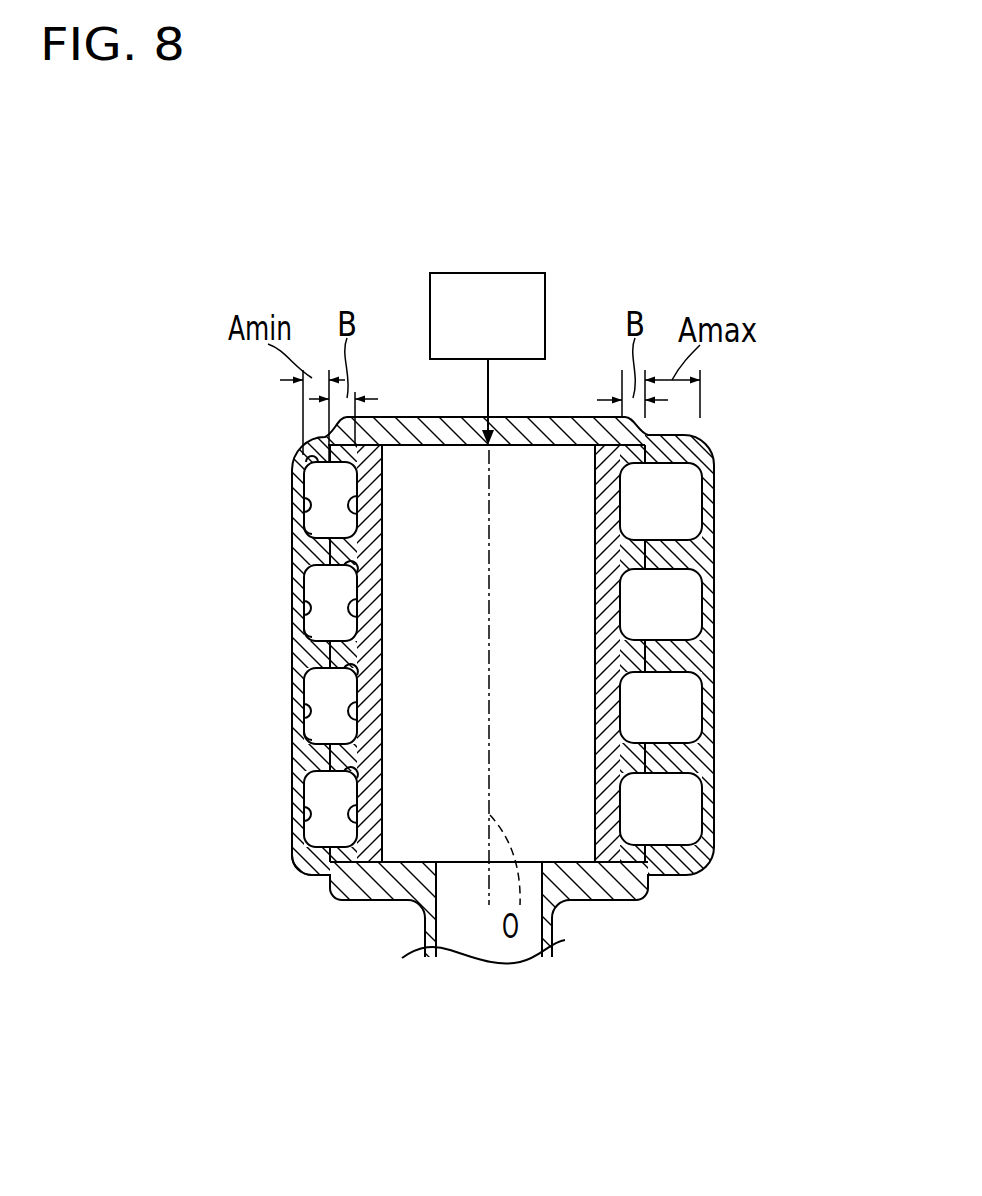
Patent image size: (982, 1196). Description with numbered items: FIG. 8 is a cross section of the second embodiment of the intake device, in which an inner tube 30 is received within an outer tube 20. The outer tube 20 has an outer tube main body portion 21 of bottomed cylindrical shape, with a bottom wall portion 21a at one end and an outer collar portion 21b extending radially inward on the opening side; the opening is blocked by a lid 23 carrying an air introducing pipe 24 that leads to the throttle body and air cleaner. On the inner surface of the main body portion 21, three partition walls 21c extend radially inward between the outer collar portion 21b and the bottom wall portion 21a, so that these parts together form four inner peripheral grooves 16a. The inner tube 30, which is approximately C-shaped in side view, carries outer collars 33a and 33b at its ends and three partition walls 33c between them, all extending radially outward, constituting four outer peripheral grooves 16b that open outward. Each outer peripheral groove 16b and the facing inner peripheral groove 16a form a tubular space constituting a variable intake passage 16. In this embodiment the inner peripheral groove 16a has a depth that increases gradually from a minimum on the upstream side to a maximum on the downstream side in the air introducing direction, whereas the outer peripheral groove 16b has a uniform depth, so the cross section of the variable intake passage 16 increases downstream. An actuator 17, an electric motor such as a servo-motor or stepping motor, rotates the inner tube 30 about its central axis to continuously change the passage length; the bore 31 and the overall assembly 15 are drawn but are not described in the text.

The shock absorber / damper assembly 15 is at (730, 490).
The variable intake passage 16 is at (648, 793).
The inner peripheral groove 16a is at (303, 814).
The outer peripheral groove 16b is at (358, 812).
The actuator 17 is at (486, 273).
The outer tube 20 is at (718, 568).
The outer tube main body portion 21 is at (714, 647).
The bottom wall portion 21a is at (540, 437).
The outer collar portion 21b is at (310, 850).
The partition wall 21c is at (305, 737).
The lid 23 is at (600, 911).
The air introducing pipe 24 is at (560, 940).
The inner tube 30 is at (362, 885).
The bore 31 is at (428, 487).
The outer collar 33a is at (306, 462).
The outer collar 33b is at (358, 878).
The partition wall 33c is at (360, 782).